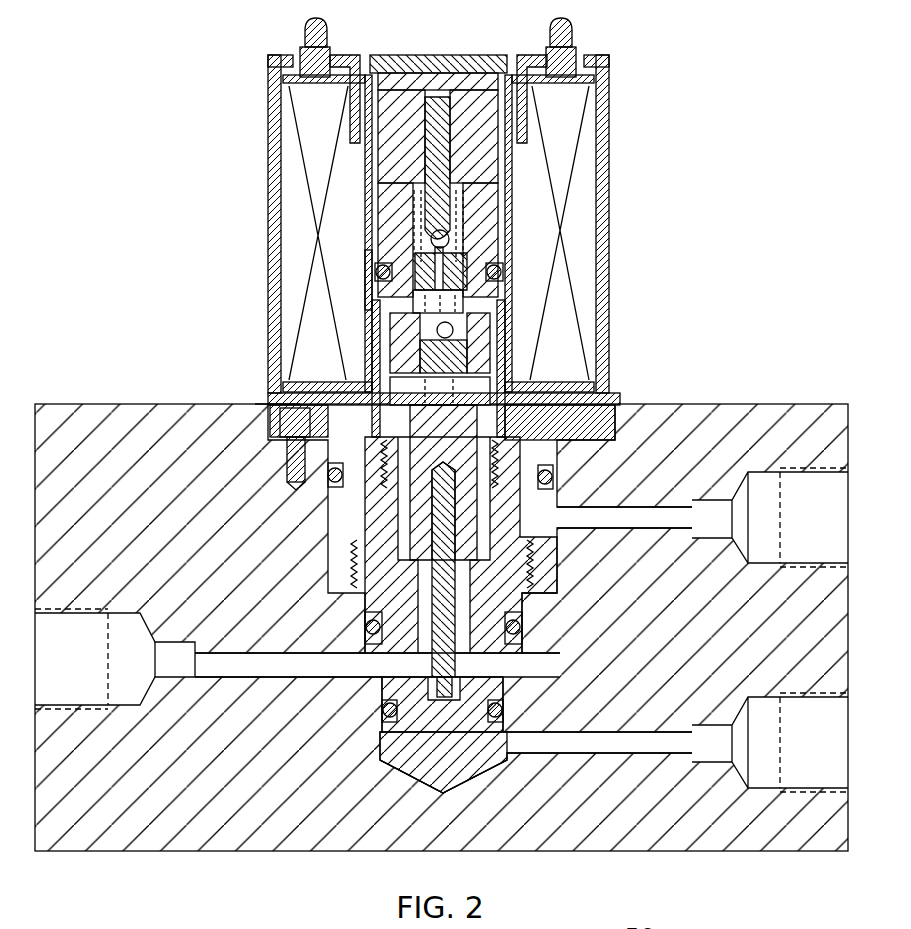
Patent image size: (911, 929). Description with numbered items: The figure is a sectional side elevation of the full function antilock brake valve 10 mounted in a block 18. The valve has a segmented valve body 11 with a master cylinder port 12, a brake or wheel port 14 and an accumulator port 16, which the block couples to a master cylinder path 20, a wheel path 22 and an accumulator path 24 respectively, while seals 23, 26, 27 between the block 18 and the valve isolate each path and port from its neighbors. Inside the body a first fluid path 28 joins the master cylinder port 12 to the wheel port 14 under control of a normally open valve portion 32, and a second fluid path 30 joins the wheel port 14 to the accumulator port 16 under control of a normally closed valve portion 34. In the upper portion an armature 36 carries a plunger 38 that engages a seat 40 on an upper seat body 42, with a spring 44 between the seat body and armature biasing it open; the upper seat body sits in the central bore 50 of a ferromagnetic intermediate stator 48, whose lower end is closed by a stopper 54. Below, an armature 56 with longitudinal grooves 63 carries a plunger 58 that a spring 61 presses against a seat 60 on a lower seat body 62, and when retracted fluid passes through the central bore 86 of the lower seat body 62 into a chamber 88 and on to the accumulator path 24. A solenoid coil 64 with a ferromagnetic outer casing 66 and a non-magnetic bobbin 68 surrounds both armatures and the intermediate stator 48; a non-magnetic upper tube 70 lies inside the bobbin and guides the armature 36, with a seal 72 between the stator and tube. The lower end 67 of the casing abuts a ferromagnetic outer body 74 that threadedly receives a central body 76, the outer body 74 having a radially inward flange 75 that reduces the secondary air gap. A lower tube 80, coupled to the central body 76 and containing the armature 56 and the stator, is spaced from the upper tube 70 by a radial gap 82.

The full function antilock brake valve 10 is at (150, 90).
The segmented valve body 11 is at (453, 590).
The master cylinder port 12 is at (545, 512).
The brake port 14 is at (400, 657).
The accumulator port 16 is at (462, 745).
The block 18 is at (85, 404).
The master cylinder path 20 is at (668, 536).
The wheel path 22 is at (212, 672).
The seal 23 is at (505, 716).
The accumulator path 24 is at (676, 755).
The seal 26 is at (325, 478).
The seal 27 is at (522, 627).
The first fluid path 28 is at (525, 388).
The second fluid path 30 is at (380, 700).
The normally open valve portion 32 is at (530, 205).
The normally closed valve portion 34 is at (530, 556).
The armature 36 is at (592, 130).
The plunger 38 is at (535, 180).
The seat 40 is at (470, 228).
The upper seat body 42 is at (505, 288).
The spring 44 is at (462, 242).
The intermediate stator 48 is at (372, 318).
The central bore 50 is at (400, 218).
The stopper 54 is at (512, 330).
The armature 56 is at (612, 434).
The plunger 58 is at (478, 578).
The seat 60 is at (478, 665).
The spring 61 is at (520, 350).
The lower seat body 62 is at (392, 742).
The grooves 63 is at (345, 505).
The solenoid coil 64 is at (320, 130).
The outer casing 66 is at (268, 85).
The lower end 67 is at (265, 405).
The bobbin 68 is at (335, 172).
The upper tube 70 is at (345, 268).
The seal 72 is at (350, 290).
The outer body 74 is at (292, 452).
The flange 75 is at (285, 425).
The central body 76 is at (350, 568).
The lower tube 80 is at (355, 392).
The radial gap 82 is at (356, 362).
The central bore 86 is at (415, 768).
The chamber 88 is at (498, 755).